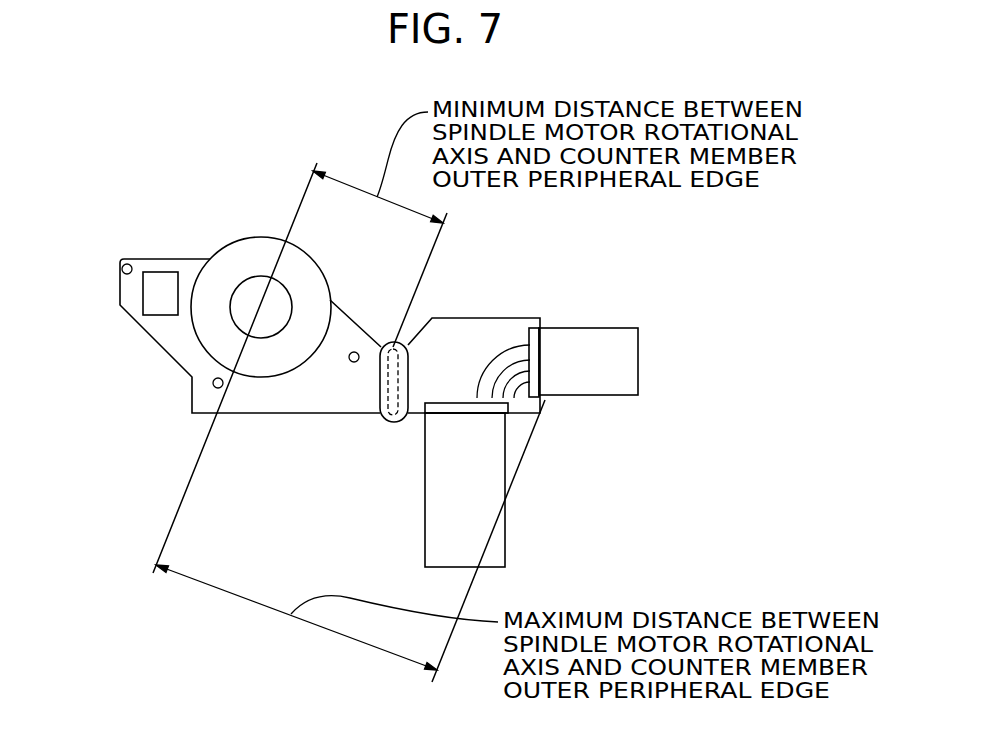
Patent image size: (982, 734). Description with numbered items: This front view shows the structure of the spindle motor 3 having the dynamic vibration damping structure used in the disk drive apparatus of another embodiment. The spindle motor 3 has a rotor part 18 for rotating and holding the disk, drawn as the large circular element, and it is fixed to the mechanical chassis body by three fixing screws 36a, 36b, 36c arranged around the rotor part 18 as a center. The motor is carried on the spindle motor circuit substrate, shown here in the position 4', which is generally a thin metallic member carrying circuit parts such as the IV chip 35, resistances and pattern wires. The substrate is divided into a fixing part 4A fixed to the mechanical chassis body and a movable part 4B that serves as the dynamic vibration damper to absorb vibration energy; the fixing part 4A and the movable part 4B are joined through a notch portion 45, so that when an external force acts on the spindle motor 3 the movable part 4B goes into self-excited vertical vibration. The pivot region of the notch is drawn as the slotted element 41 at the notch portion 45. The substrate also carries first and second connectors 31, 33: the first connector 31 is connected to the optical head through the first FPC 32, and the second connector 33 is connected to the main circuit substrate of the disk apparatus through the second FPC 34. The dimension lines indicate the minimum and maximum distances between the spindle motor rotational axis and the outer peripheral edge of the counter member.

The spindle motor 3 is at (218, 231).
The rotor part 18 is at (267, 237).
The first connector 31 is at (535, 358).
The first FPC 32 is at (612, 335).
The second connector 33 is at (473, 408).
The second FPC 34 is at (442, 510).
The IV chip 35 is at (148, 300).
The fixing screw 36a is at (122, 268).
The fixing screw 36b is at (212, 383).
The fixing screw 36c is at (354, 351).
The pivot shaft 41 is at (388, 342).
The notch portion 45 is at (381, 376).
The fixing part 4A is at (240, 408).
The movable part 4B is at (525, 402).
The traverse chassis position 4' is at (267, 476).